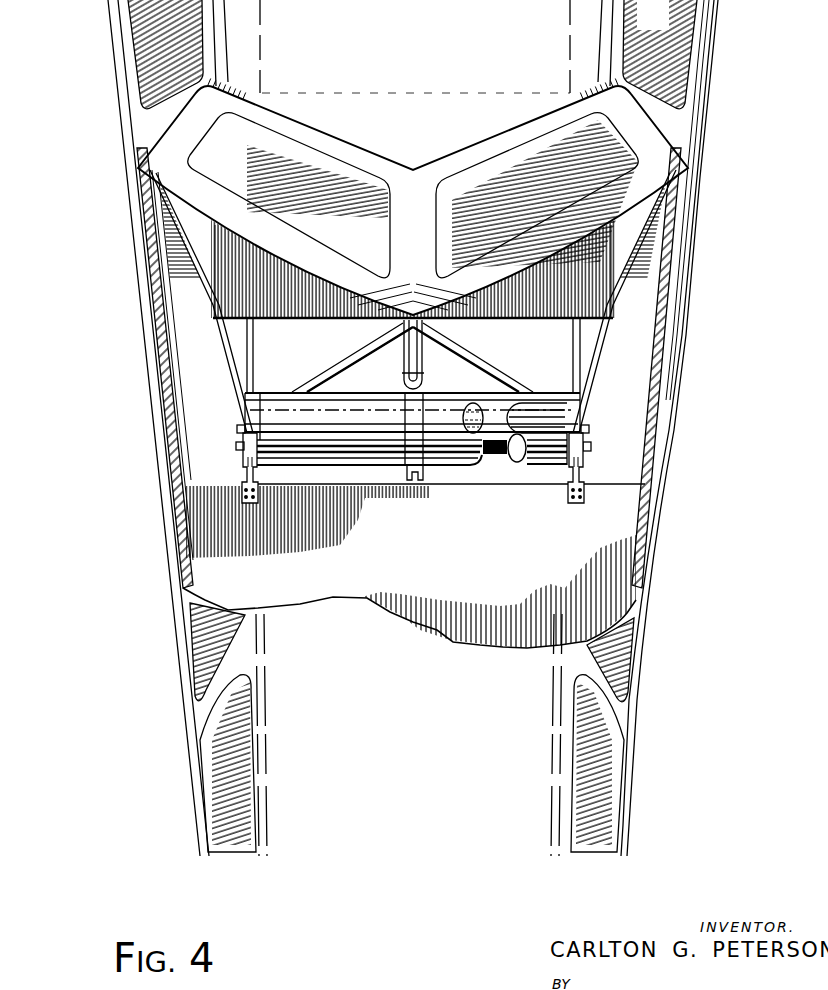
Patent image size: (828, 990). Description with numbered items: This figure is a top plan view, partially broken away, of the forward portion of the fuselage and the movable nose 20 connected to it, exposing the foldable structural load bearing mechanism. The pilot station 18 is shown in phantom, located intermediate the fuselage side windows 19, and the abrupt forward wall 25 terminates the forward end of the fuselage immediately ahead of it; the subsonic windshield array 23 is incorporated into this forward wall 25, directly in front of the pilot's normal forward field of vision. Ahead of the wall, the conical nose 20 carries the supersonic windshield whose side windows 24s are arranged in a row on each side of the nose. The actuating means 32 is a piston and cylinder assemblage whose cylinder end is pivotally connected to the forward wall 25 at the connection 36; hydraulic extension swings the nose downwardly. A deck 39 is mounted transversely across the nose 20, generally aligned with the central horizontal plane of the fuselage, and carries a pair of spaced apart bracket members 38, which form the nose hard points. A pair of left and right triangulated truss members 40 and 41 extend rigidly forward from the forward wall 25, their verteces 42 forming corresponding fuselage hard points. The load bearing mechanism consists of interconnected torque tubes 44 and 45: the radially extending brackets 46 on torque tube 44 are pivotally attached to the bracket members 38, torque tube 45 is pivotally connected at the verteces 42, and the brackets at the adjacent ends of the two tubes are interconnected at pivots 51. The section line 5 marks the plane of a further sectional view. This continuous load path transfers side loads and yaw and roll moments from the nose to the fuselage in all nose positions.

The pilot station 18 is at (462, 52).
The fuselage side windows 19 is at (641, 28).
The movable nose 20 is at (424, 720).
The windshield array 23 is at (529, 170).
The side windows 24s is at (189, 648).
The forward wall 25 is at (532, 318).
The actuating means 32 is at (442, 356).
The connection 36 is at (399, 382).
The bracket members 38 is at (243, 480).
The deck 39 is at (358, 562).
The left truss member 40 is at (221, 356).
The right truss member 41 is at (615, 356).
The verteces 42 is at (240, 423).
The torque tube 44 is at (453, 468).
The torque tube 45 is at (496, 468).
The brackets 46 is at (238, 445).
The pivots 51 is at (590, 451).
The section line 5- 5 is at (150, 482).